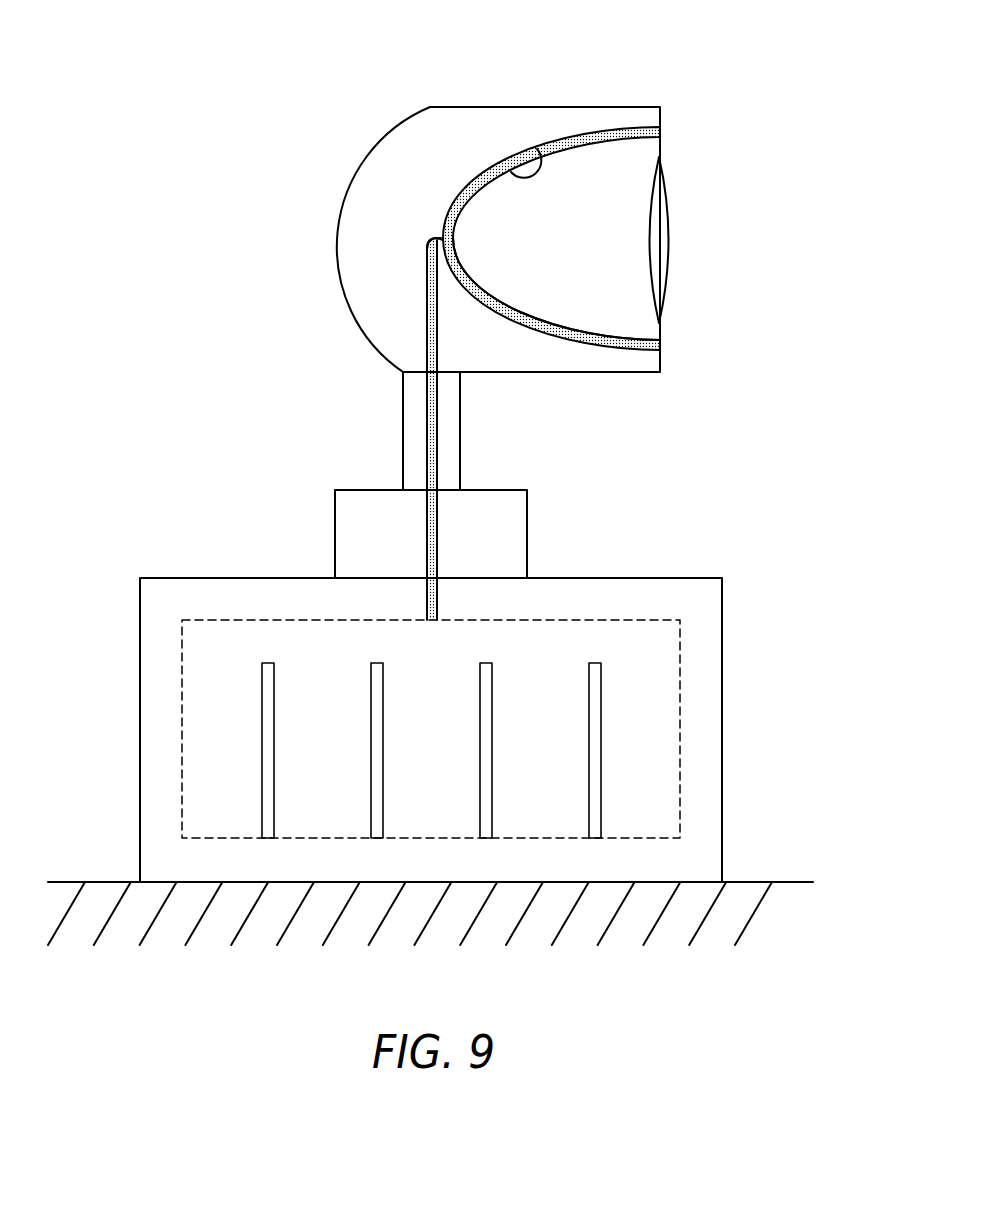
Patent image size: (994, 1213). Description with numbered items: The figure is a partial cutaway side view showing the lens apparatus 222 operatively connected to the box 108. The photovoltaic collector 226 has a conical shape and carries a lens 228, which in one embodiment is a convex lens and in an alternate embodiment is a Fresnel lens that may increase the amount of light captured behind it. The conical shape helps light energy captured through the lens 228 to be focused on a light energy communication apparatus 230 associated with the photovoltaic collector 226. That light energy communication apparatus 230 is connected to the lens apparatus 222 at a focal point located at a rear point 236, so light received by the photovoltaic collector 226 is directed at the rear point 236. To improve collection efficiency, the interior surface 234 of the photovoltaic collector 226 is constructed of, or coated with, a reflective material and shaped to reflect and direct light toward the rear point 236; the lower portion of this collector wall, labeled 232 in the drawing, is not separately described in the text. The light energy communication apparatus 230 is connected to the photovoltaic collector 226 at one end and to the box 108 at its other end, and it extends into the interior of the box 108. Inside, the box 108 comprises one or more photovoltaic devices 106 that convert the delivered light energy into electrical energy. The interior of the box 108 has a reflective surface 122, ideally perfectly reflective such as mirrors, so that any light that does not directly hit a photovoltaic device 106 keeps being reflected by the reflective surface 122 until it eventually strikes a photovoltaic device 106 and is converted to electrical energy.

The box 108 is at (216, 578).
The reflective surface 122 is at (182, 686).
The photovoltaic device 106 is at (262, 745).
The lens apparatus 222 is at (337, 243).
The photovoltaic collector 226 is at (592, 117).
The lens 228 is at (668, 238).
The light energy communication apparatus 230 is at (425, 285).
The reflective surface 232 is at (567, 347).
The interior surface 234 is at (507, 168).
The rear point 236 is at (438, 234).